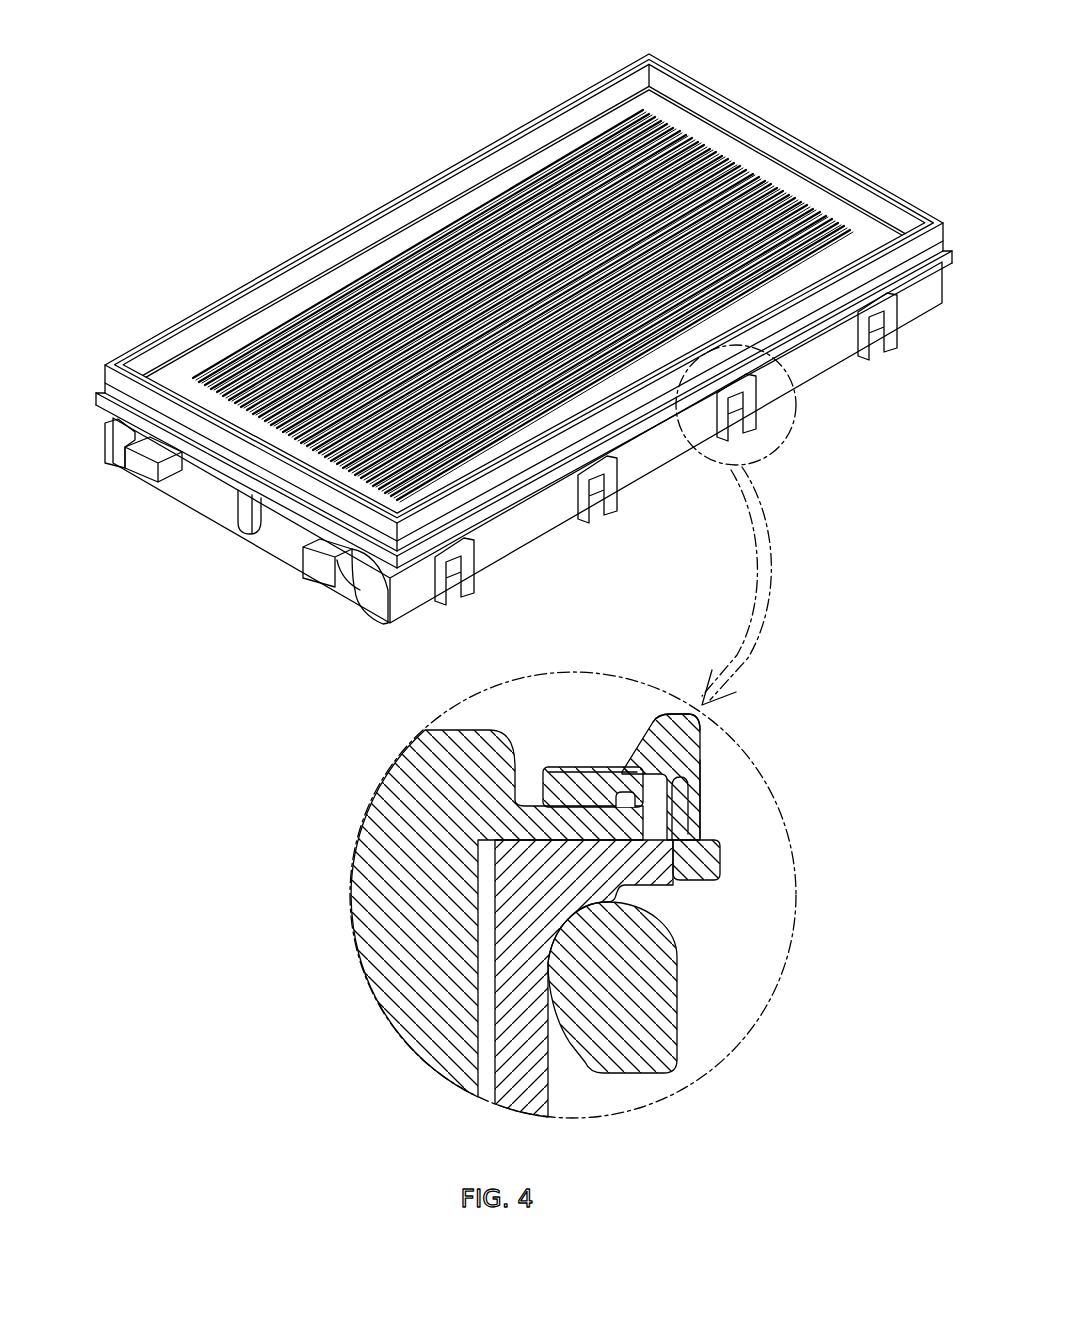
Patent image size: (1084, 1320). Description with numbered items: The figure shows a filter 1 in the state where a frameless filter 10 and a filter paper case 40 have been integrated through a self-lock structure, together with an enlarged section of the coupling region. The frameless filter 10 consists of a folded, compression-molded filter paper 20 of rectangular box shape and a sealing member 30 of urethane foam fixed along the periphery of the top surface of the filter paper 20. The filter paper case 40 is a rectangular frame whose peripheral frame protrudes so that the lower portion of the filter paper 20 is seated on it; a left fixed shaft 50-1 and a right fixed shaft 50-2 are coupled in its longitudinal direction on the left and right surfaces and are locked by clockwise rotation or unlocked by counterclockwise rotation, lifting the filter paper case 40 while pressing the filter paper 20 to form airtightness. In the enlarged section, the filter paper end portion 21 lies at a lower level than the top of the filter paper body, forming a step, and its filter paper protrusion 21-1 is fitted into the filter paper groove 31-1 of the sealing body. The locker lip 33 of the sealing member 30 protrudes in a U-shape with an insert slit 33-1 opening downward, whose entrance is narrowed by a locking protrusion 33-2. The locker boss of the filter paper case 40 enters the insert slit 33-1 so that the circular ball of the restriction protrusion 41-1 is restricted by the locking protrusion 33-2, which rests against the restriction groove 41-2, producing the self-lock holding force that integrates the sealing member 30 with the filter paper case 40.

The filter 1 is at (208, 218).
The frameless filter 10 is at (885, 58).
The filter paper 20 is at (829, 222).
The filter paper end portion 21 is at (557, 813).
The filter paper protrusion 21-1 is at (620, 806).
The sealing member 30 is at (789, 144).
The filter paper groove 31-1 is at (616, 797).
The locker lip 33 is at (703, 752).
The insert slit 33-1 is at (698, 718).
The locking protrusion 33-2 is at (698, 818).
The filter paper case 40 is at (286, 527).
The restriction protrusion 41-1 is at (675, 778).
The restriction groove 41-2 is at (718, 865).
The left fixed shaft 50-1 is at (147, 467).
The right fixed shaft 50-2 is at (316, 567).